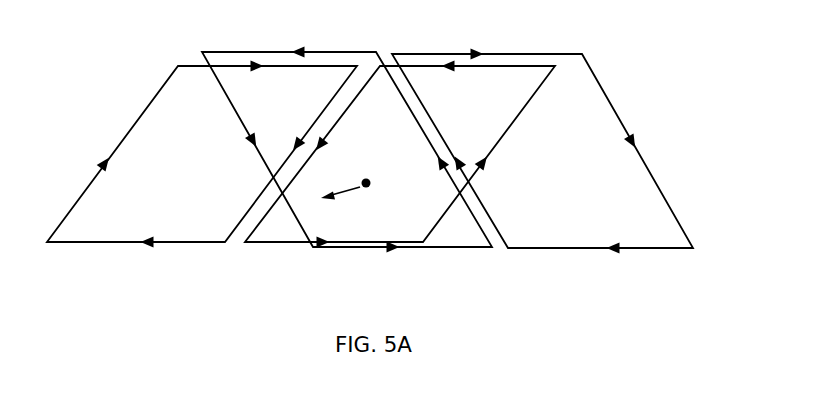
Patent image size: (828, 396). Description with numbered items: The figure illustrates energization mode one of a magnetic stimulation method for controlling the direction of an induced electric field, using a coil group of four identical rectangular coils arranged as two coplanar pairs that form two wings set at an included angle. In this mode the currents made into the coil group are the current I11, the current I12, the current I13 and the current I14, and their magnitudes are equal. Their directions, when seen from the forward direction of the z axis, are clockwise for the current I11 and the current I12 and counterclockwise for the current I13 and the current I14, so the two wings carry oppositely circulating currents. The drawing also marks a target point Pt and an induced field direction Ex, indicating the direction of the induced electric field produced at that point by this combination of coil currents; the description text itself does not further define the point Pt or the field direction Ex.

The current I11 is at (202, 170).
The current I12 is at (400, 170).
The current I13 is at (347, 163).
The current I14 is at (542, 166).
The target point Pt is at (372, 169).
The electric field vector in x direction Ex is at (322, 208).